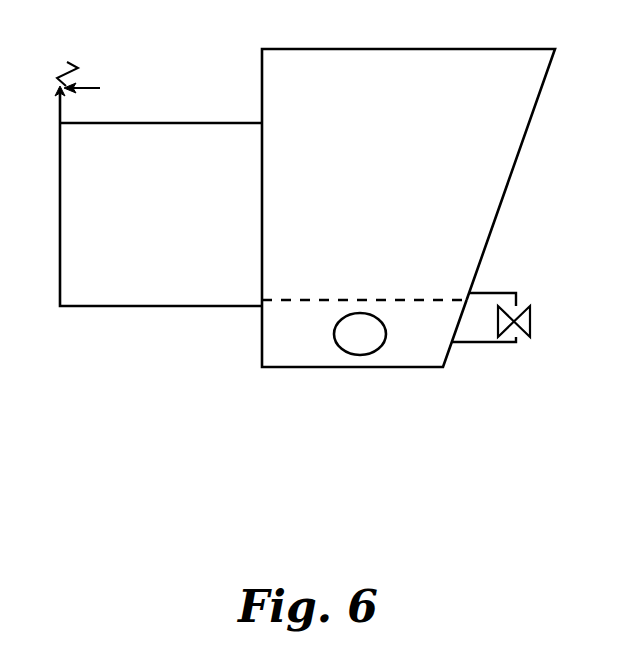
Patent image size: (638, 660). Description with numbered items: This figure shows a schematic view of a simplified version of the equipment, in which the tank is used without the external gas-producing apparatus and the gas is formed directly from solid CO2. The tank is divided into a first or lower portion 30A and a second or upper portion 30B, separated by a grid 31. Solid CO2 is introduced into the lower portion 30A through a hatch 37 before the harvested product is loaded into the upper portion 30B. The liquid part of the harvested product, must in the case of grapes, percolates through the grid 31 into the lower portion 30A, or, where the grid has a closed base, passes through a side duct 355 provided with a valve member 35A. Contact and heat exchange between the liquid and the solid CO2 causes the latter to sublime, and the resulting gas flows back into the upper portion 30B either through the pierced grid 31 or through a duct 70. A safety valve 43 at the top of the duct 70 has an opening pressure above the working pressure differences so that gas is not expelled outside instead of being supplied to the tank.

The second portion 30B is at (368, 179).
The first portion 30A is at (274, 334).
The grid 31 is at (380, 299).
The duct 70 is at (62, 243).
The safety valve 43 is at (62, 60).
The outlet pipe 355 is at (474, 343).
The valve member 35A is at (530, 305).
The hatch 37 is at (365, 343).